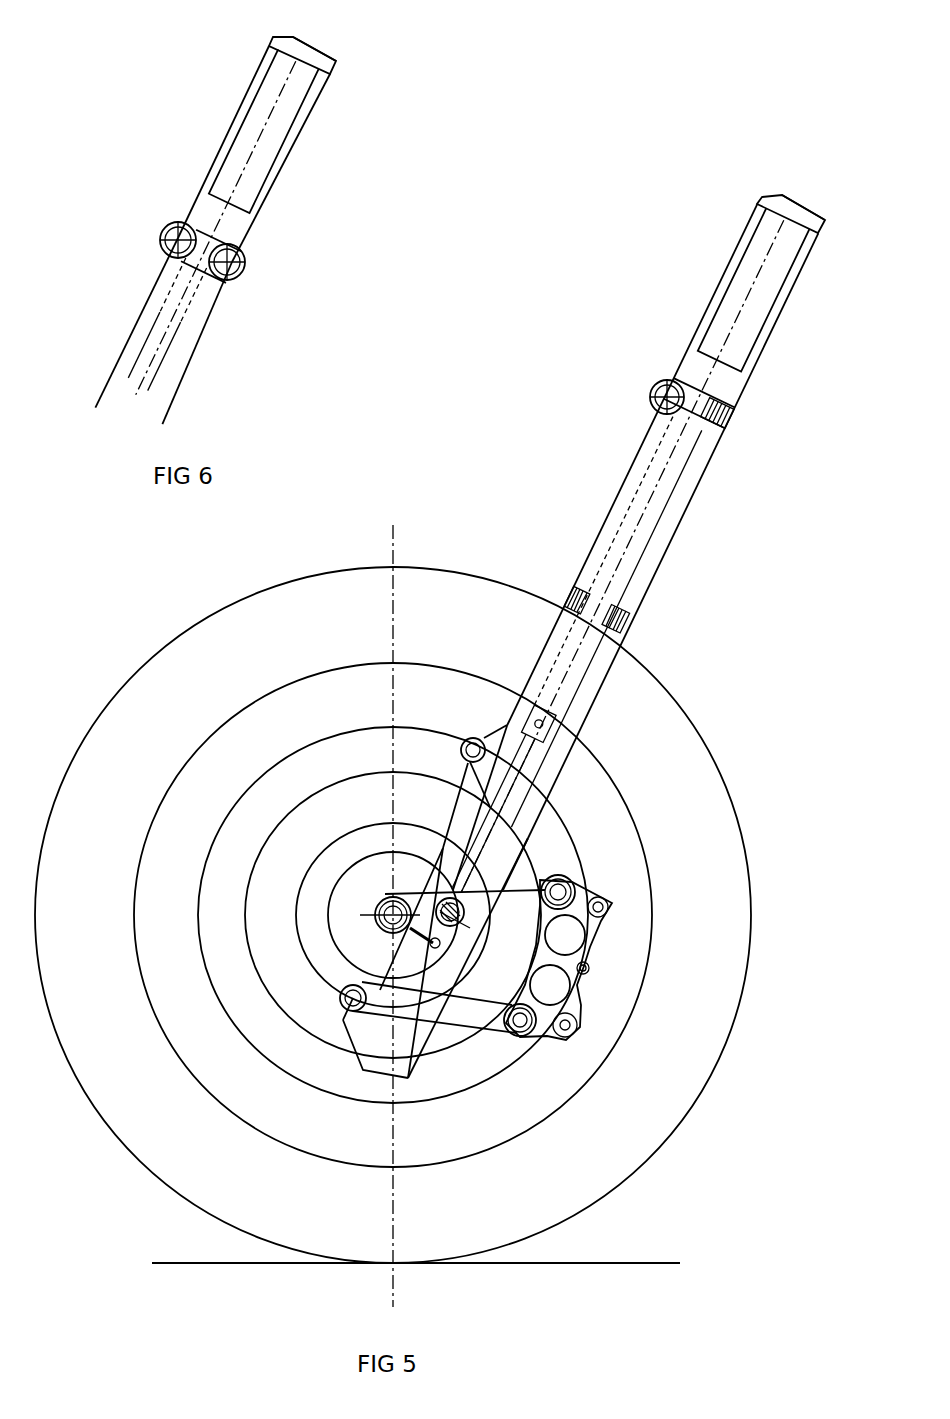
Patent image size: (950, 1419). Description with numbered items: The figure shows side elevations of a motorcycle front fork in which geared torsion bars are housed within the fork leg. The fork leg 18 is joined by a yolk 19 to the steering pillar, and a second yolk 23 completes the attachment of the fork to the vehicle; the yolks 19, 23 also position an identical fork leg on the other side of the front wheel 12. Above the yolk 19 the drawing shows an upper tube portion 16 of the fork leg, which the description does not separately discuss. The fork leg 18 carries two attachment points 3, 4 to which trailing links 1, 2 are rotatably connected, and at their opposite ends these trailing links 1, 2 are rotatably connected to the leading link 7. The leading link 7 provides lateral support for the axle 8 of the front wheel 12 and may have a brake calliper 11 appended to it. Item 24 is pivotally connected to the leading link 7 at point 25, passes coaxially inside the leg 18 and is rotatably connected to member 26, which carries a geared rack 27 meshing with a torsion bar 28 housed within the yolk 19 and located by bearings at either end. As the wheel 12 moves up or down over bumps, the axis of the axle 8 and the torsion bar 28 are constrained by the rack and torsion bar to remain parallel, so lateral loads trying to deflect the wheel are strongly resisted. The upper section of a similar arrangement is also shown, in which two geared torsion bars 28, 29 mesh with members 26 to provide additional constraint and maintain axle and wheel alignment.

In FIG. 5, the trailing link 1 is at (535, 845).
In FIG. 5, the trailing link 2 is at (458, 1015).
In FIG. 5, the attachment point 3 is at (462, 746).
In FIG. 5, the attachment point 4 is at (342, 1005).
In FIG. 5, the leading link 7 is at (507, 947).
In FIG. 5, the axle 8 is at (374, 921).
In FIG. 5, the brake calliper 11 is at (550, 983).
In FIG. 5, the front wheel 12 is at (660, 1150).
In FIG. 6, the upper tube 16 is at (260, 107).
In FIG. 5, the upper tube 16 is at (752, 265).
In FIG. 6, the fork leg 18 is at (116, 357).
In FIG. 5, the fork leg 18 is at (603, 517).
In FIG. 6, the yolk 19 is at (217, 233).
In FIG. 5, the yolk 19 is at (735, 410).
In FIG. 6, the yolk 23 is at (337, 60).
In FIG. 5, the yolk 23 is at (826, 220).
In FIG. 5, the item 24 is at (540, 750).
In FIG. 5, the point 25 is at (465, 912).
In FIG. 6, the member 26 is at (155, 372).
In FIG. 5, the member 26 is at (650, 512).
In FIG. 6, the geared rack 27 is at (182, 322).
In FIG. 5, the geared rack 27 is at (652, 467).
In FIG. 6, the torsion bar 28 is at (164, 229).
In FIG. 5, the torsion bar 28 is at (658, 386).
In FIG. 6, the torsion bar 29 is at (246, 264).